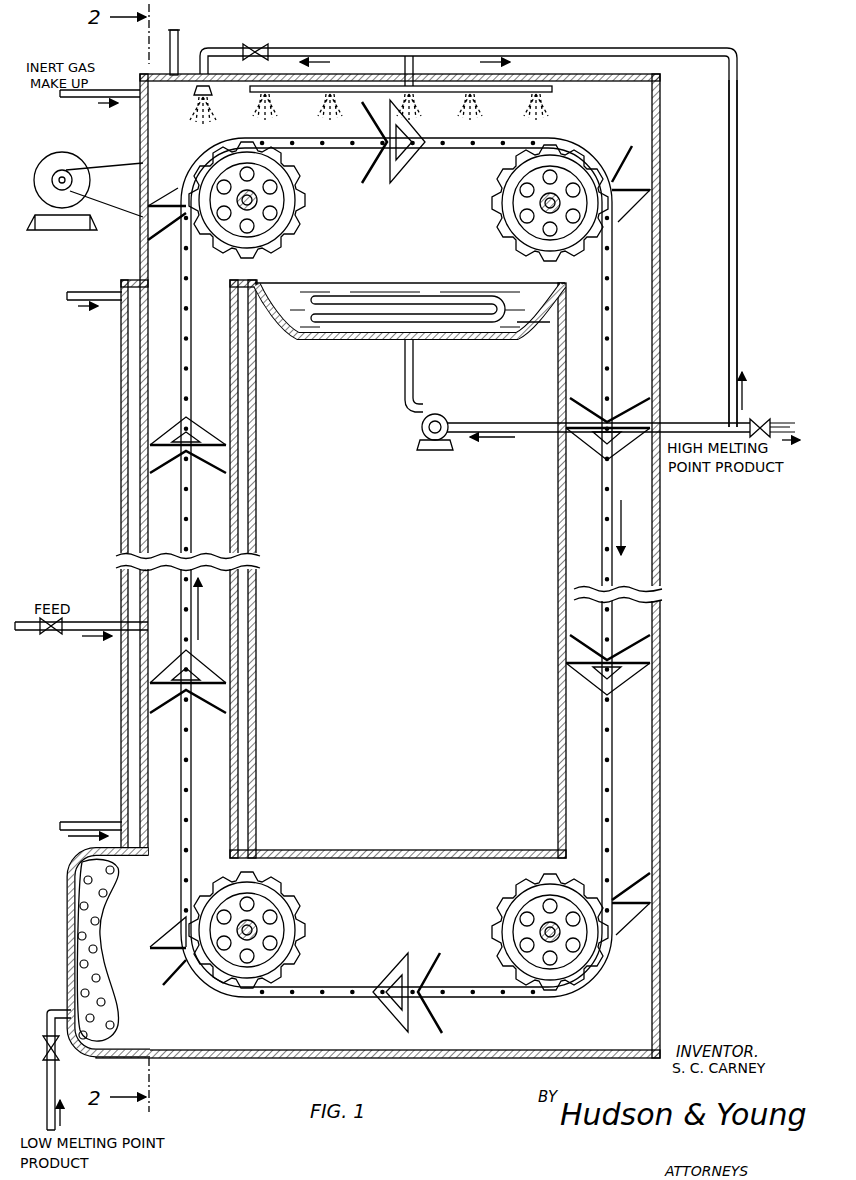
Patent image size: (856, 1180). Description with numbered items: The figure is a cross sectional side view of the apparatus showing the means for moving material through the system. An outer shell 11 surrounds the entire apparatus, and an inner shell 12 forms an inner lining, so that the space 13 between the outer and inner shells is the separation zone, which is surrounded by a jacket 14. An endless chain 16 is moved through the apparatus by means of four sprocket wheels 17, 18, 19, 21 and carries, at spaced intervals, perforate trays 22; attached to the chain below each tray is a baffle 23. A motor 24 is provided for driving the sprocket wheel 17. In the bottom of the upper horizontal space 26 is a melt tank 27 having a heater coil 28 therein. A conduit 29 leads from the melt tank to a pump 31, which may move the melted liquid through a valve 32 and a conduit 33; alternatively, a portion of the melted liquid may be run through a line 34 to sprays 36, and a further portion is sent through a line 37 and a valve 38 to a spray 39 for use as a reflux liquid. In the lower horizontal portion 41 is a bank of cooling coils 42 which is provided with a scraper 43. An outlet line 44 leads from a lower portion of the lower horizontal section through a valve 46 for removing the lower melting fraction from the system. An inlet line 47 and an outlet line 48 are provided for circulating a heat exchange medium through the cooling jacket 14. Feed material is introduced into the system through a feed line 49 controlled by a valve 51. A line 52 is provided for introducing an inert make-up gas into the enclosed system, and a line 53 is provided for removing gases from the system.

The outer shell 11 is at (660, 745).
The inner shell 12 is at (238, 412).
The space 13 is at (124, 748).
The jacket 14 is at (256, 746).
The endless chain 16 is at (192, 808).
The sprocket wheel 17 is at (280, 250).
The sprocket wheel 18 is at (508, 252).
The sprocket wheel 19 is at (490, 912).
The sprocket wheel 21 is at (300, 910).
The perforate trays 22 is at (228, 684).
The baffle 23 is at (196, 478).
The motor 24 is at (84, 158).
The upper horizontal space 26 is at (657, 118).
The melt tank 27 is at (382, 340).
The heater coil 28 is at (393, 298).
The conduit 29 is at (414, 372).
The pump 31 is at (440, 416).
The valve 32 is at (761, 420).
The conduit 33 is at (783, 420).
The line 34 is at (728, 272).
The sprays 36 is at (552, 106).
The line 37 is at (330, 46).
The valve 38 is at (255, 44).
The spray 39 is at (197, 92).
The lower horizontal portion 41 is at (342, 1046).
The cooling coils 42 is at (112, 888).
The scraper 43 is at (103, 962).
The outlet line 44 is at (46, 1090).
The valve 46 is at (58, 1050).
The inlet line 47 is at (86, 820).
The outlet line 48 is at (98, 290).
The feed line 49 is at (70, 633).
The valve 51 is at (56, 636).
The line 52 is at (74, 100).
The line 53 is at (178, 38).